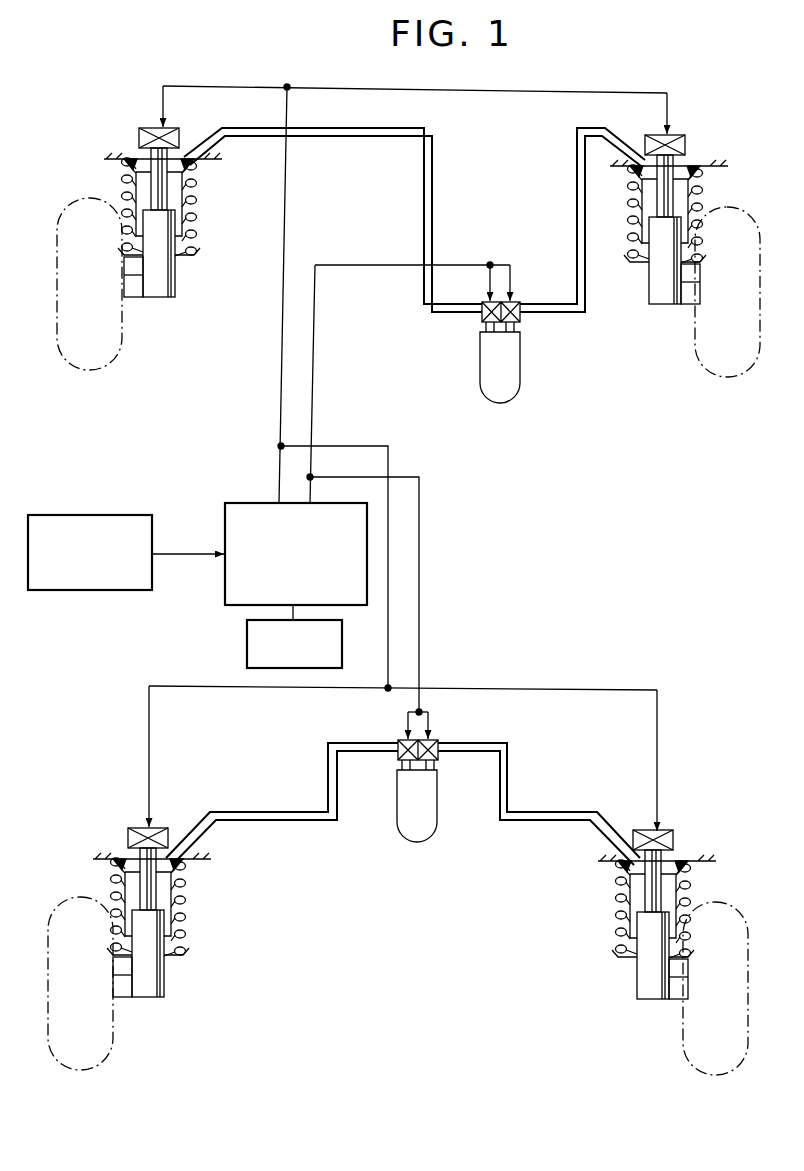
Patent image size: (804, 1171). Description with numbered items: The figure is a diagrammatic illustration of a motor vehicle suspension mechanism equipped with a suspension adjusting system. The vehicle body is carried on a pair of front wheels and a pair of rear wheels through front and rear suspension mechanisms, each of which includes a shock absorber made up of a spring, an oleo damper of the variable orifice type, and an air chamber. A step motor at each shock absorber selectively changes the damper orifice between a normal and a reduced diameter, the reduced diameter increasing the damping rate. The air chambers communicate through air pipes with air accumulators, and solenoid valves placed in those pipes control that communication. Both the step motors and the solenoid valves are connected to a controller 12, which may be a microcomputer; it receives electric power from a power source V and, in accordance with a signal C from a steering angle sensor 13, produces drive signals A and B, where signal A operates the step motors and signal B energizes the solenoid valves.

The controller 12 is at (253, 503).
The steering angle sensor 13 is at (122, 515).
The drive signal A is at (284, 409).
The drive signal B is at (313, 410).
The steering angle signal C is at (185, 554).
The power source V is at (345, 658).